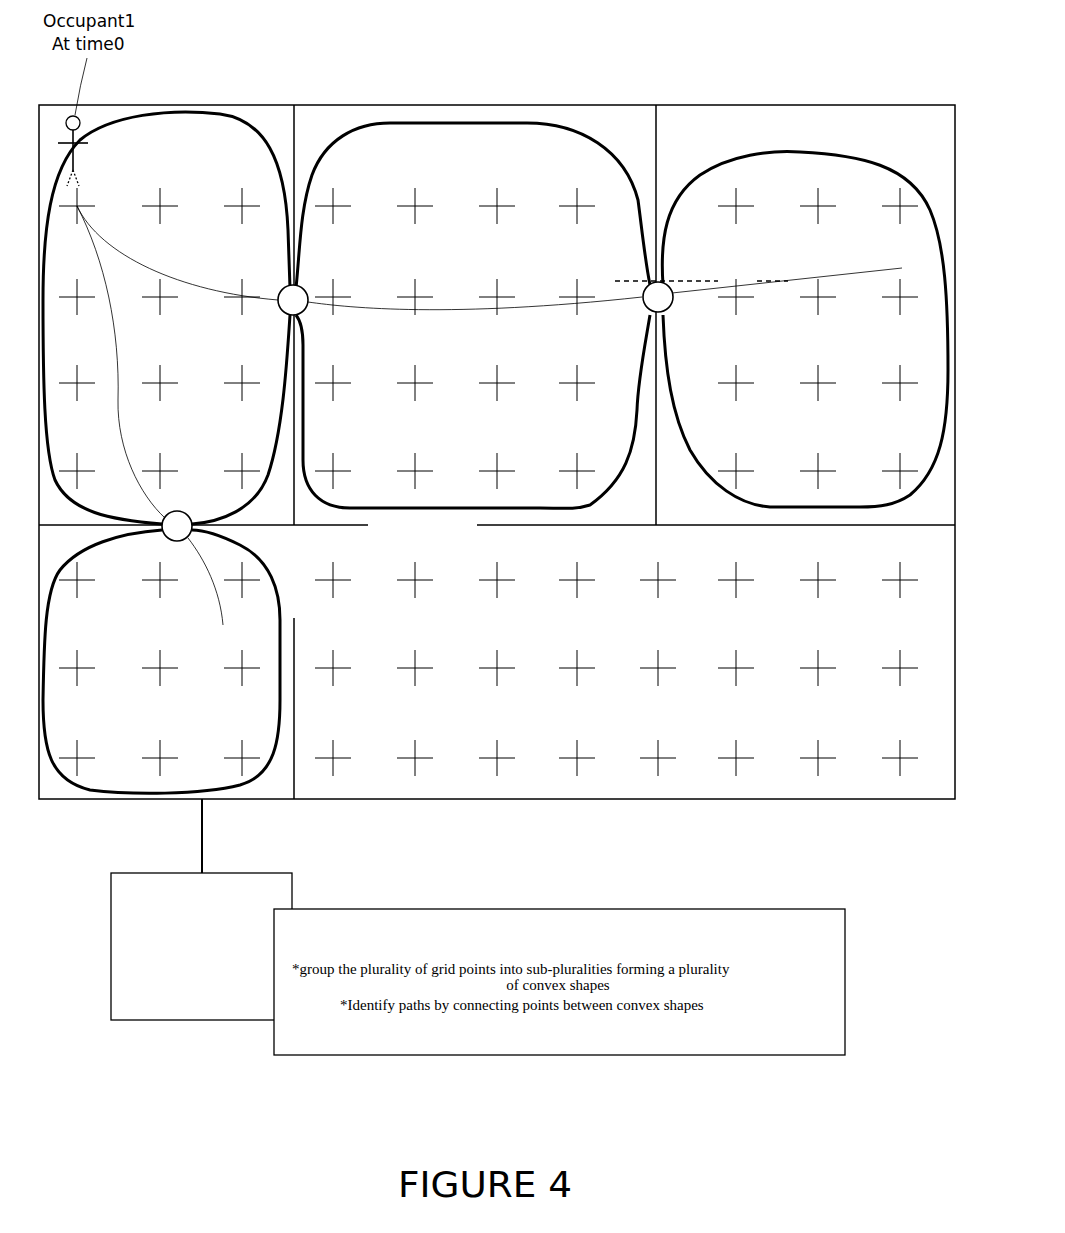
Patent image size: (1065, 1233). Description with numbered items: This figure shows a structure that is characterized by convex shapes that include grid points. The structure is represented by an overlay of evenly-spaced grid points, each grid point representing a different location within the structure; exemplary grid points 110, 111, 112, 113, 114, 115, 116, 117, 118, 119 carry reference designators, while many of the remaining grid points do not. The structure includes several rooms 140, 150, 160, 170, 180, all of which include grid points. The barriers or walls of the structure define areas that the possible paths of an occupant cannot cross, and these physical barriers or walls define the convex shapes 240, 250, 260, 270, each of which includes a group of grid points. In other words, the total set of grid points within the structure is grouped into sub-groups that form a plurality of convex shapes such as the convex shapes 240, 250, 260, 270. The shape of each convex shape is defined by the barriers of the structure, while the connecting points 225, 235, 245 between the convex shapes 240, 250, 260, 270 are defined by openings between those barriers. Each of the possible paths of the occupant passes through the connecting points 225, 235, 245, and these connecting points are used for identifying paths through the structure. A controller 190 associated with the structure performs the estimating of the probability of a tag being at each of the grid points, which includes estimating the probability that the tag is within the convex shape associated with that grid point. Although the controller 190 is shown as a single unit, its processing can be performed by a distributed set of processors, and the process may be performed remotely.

The grid point 110 is at (70, 212).
The grid point 111 is at (148, 212).
The grid point 112 is at (230, 212).
The grid point 113 is at (346, 294).
The grid point 114 is at (424, 294).
The grid point 115 is at (537, 288).
The grid point 116 is at (88, 482).
The grid point 117 is at (169, 466).
The grid point 118 is at (229, 466).
The grid point 119 is at (250, 592).
The room 140 is at (248, 132).
The room 150 is at (610, 135).
The room 160 is at (803, 145).
The room 170 is at (253, 794).
The room 180 is at (840, 794).
The controller 190 is at (182, 993).
The connecting point 225 is at (283, 290).
The connecting point 235 is at (645, 287).
The connecting point 245 is at (166, 540).
The convex shape 240 is at (152, 163).
The convex shape 250 is at (455, 169).
The convex shape 260 is at (757, 242).
The convex shape 270 is at (97, 719).